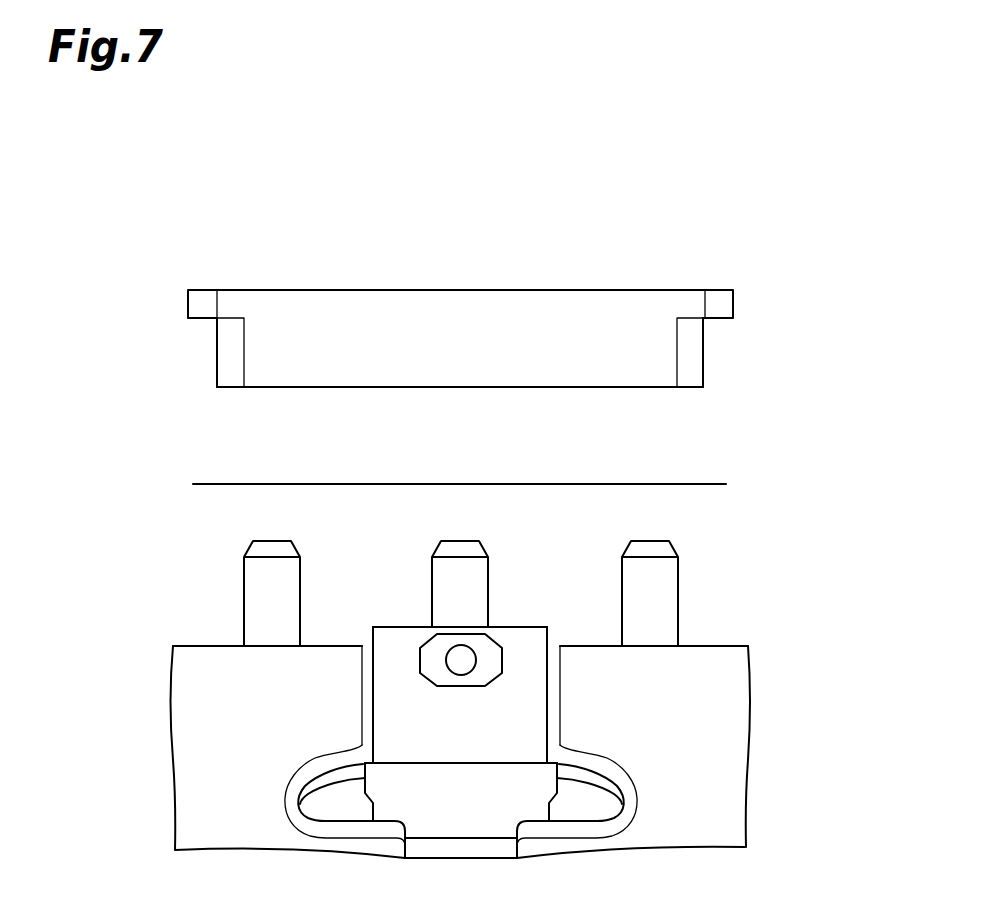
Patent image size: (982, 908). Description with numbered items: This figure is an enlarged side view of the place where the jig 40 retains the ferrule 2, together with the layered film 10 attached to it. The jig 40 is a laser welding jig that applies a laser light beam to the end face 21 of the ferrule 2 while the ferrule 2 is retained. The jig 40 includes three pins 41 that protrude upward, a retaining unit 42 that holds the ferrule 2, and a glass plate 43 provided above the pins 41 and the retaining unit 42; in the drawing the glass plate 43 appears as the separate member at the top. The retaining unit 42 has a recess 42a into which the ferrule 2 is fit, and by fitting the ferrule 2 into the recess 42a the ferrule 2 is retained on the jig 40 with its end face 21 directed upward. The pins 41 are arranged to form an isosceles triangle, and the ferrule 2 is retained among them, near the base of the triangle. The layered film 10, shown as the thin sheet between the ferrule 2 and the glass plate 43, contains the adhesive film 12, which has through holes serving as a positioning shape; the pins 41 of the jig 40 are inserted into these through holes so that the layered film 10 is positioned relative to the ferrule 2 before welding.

The jig 40 is at (508, 314).
The glass plate 43 is at (281, 388).
The layered film 10 is at (459, 452).
The adhesive film 12 is at (628, 482).
The pins 41 is at (245, 576).
The retaining unit 42 is at (461, 713).
The recess 42a is at (373, 658).
The ferrule 2 is at (461, 703).
The end face 21 is at (538, 627).